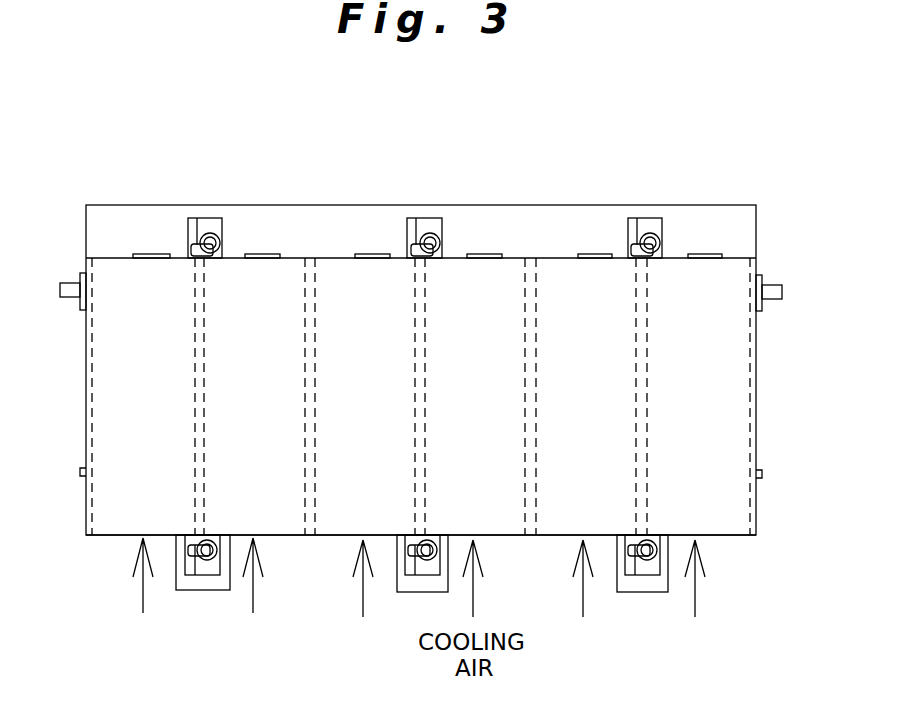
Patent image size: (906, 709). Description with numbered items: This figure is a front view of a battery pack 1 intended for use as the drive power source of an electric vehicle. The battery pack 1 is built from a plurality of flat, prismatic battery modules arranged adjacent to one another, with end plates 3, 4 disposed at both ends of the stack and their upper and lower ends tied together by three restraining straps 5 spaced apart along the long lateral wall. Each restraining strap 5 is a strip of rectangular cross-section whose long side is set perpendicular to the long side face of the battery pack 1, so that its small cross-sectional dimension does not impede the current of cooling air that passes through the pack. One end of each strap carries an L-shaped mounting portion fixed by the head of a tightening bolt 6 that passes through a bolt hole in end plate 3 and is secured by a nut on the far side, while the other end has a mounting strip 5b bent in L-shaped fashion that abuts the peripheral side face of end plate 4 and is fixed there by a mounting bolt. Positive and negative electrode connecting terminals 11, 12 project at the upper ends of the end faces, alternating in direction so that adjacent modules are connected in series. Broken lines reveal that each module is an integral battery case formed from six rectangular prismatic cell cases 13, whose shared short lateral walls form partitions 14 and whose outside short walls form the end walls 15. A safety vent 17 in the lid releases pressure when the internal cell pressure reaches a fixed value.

The battery pack 1 is at (118, 195).
The end plate 3 is at (296, 205).
The end plate 4 is at (120, 508).
The restraining strap 5 is at (190, 235).
The mounting strip 5b is at (192, 262).
The tightening bolt 6 is at (207, 252).
The positive electrode connecting terminal 11 is at (770, 300).
The negative electrode connecting terminal 12 is at (65, 300).
The cell case 13 is at (135, 432).
The partition 14 is at (200, 493).
The end wall 15 is at (86, 487).
The safety vent 17 is at (488, 254).